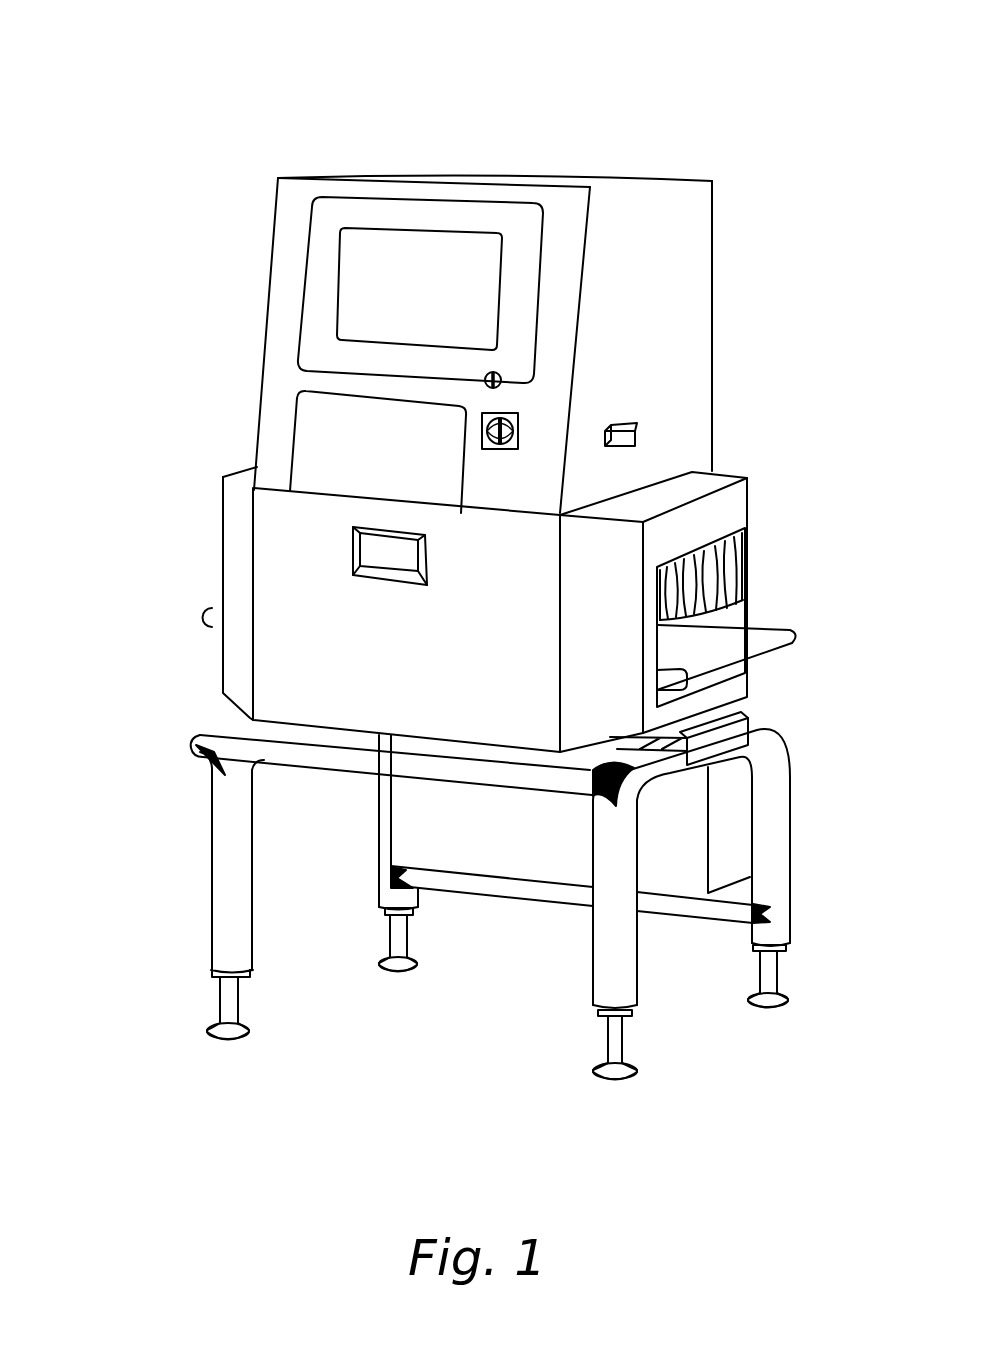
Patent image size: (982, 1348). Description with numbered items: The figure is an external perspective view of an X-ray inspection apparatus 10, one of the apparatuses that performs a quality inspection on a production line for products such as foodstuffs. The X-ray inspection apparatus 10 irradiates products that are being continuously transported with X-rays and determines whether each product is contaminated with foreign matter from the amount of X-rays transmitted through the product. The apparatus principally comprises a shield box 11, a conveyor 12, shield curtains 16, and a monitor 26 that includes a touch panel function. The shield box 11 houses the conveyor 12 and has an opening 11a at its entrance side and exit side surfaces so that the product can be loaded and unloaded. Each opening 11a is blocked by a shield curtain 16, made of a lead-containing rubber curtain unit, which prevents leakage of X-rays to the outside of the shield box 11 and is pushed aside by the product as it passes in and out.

The X-ray inspection apparatus 10 is at (686, 117).
The shield box 11 is at (693, 318).
The opening 11a is at (210, 576).
The conveyor 12 is at (717, 658).
The shield curtain 16 is at (717, 603).
The monitor 26 is at (417, 360).